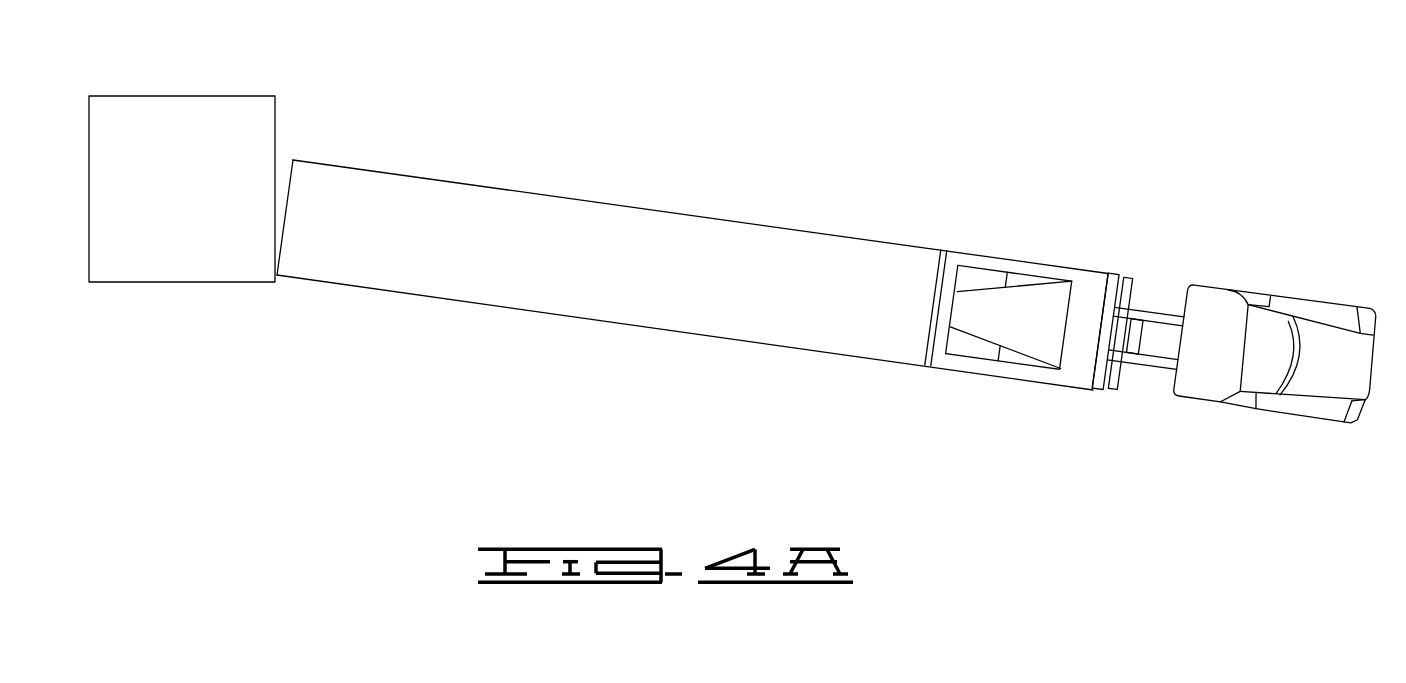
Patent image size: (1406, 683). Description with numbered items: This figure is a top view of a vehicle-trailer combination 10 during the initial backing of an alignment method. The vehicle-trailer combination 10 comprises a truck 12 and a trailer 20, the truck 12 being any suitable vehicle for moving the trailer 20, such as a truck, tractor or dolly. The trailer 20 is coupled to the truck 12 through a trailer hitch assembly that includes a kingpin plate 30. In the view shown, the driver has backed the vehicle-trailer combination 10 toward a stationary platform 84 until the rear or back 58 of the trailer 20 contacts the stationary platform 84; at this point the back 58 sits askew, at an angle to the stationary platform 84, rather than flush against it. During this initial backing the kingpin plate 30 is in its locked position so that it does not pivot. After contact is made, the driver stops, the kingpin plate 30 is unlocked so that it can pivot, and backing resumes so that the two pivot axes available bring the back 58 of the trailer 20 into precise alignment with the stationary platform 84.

The vehicle-trailer combination 10 is at (1096, 220).
The truck 12 is at (1213, 408).
The trailer 20 is at (700, 215).
The kingpin plate 30 is at (988, 328).
The back of trailer 58 is at (290, 178).
The stationary platform 84 is at (155, 283).